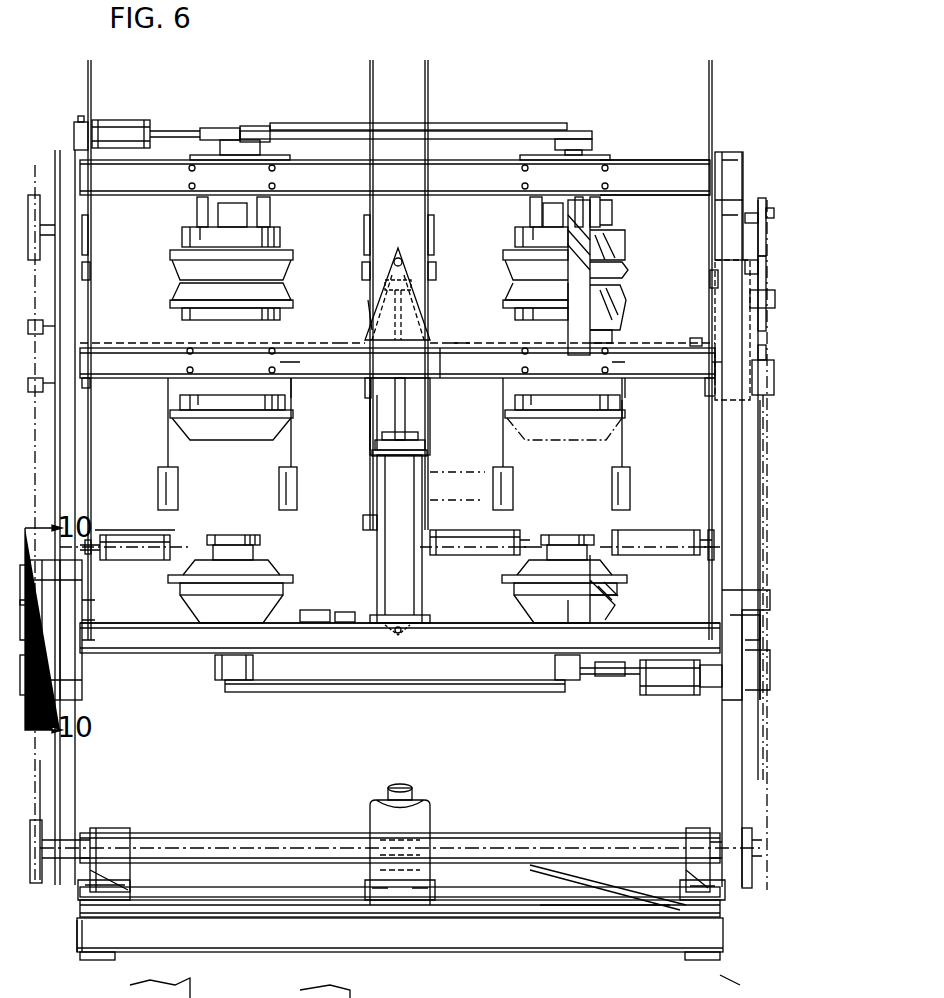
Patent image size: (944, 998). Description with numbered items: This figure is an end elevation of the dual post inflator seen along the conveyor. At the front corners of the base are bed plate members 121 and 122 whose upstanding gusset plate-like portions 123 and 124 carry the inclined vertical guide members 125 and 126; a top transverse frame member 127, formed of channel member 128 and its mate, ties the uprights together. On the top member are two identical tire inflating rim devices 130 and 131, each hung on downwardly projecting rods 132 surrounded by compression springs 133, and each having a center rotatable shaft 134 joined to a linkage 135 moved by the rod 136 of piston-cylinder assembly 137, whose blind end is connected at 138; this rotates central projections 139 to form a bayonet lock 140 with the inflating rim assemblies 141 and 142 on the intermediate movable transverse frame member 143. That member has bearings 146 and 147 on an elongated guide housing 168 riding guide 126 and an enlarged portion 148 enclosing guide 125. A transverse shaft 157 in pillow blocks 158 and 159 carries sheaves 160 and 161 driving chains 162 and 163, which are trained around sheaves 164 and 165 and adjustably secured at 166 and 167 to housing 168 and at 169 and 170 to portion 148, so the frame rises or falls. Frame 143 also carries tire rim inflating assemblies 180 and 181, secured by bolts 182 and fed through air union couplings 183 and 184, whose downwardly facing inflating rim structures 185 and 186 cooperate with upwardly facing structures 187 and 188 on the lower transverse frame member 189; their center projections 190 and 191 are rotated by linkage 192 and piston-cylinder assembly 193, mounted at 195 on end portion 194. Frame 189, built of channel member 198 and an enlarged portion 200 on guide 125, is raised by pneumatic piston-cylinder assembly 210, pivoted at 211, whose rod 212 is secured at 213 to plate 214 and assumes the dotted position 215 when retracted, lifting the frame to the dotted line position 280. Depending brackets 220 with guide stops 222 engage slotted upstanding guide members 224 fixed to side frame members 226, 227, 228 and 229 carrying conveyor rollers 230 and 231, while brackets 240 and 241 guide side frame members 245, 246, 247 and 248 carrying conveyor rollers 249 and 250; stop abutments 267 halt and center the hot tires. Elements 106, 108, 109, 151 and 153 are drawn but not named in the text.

The floor 106 is at (400, 960).
The base frame 108 is at (724, 932).
The base end 109 is at (78, 932).
The bed plate member 121 is at (112, 916).
The bed plate member 122 is at (690, 906).
The upstanding gusset plate-like portion 123 is at (80, 900).
The upstanding gusset plate-like portion 124 is at (740, 886).
The inclined vertical guide member 125 is at (75, 758).
The inclined vertical guide member 126 is at (724, 750).
The top transverse frame member 127 is at (636, 152).
The channel member 128 is at (458, 176).
The tire inflating rim device 130 is at (168, 226).
The tire inflating rim device 131 is at (634, 236).
The downwardly projecting rod 132 is at (528, 213).
The compression spring 133 is at (603, 212).
The center rotatable shaft 134 is at (265, 208).
The linkage 135 is at (478, 124).
The rod 136 is at (185, 128).
The piston-cylinder assembly 137 is at (125, 120).
The blind end connection 138 is at (80, 120).
The central projection 139 is at (618, 268).
The bayonet lock 140 is at (616, 300).
The inflating rim assembly 141 is at (185, 292).
The inflating rim assembly 142 is at (520, 296).
The intermediate movable transverse frame member 143 is at (478, 376).
The bearing 146 is at (758, 420).
The bearing 147 is at (752, 268).
The enlarged portion 148 is at (65, 360).
The diagonal brace 151 is at (585, 906).
The motor 153 is at (425, 830).
The transverse shaft 157 is at (252, 840).
The pillow block 158 is at (112, 842).
The pillow block 159 is at (690, 850).
The sheave 160 is at (45, 836).
The sheave 161 is at (740, 850).
The chain 162 is at (38, 786).
The chain 163 is at (765, 776).
The sheave 164 is at (36, 194).
The sheave 165 is at (762, 205).
The adjustable securing means 166 is at (768, 306).
The adjustable securing means 167 is at (766, 380).
The elongated guide housing 168 is at (744, 350).
The adjustment means 169 is at (45, 390).
The adjustment means 170 is at (43, 328).
The tire rim inflating assembly 180 is at (296, 396).
The tire rim inflating assembly 181 is at (622, 410).
The bolt 182 is at (278, 371).
The air union coupling 183 is at (612, 336).
The air union coupling 184 is at (624, 380).
The downwardly facing inflating rim structure 185 is at (232, 440).
The downwardly facing inflating rim structure 186 is at (622, 440).
The upwardly facing inflating rim structure 187 is at (288, 570).
The upwardly facing inflating rim structure 188 is at (632, 598).
The lower transverse frame member 189 is at (456, 616).
The center projection 190 is at (236, 540).
The center projection 191 is at (565, 545).
The linkage 192 is at (360, 694).
The piston-cylinder assembly 193 is at (665, 696).
The end portion 194 is at (724, 598).
The blind end mounting 195 is at (708, 690).
The transverse structural channel-shaped member 198 is at (182, 654).
The enlarged portion 200 is at (70, 680).
The pneumatic piston-cylinder assembly 210 is at (400, 578).
The pivot 211 is at (408, 633).
The rod 212 is at (405, 420).
The rod securing point 213 is at (404, 263).
The plate 214 is at (416, 320).
The retracted rod end position 215 is at (368, 312).
The depending bracket 220 is at (88, 240).
The guide stop 222 is at (90, 278).
The upstanding guide member 224 is at (92, 84).
The side frame member 226 is at (98, 342).
The side frame member 227 is at (360, 342).
The side frame member 228 is at (436, 342).
The side frame member 229 is at (697, 338).
The conveyor roller 230 is at (364, 382).
The conveyor roller 231 is at (712, 378).
The bracket 240 is at (370, 436).
The bracket 241 is at (92, 386).
The conveyor side frame member 245 is at (100, 535).
The conveyor side frame member 246 is at (370, 520).
The conveyor side frame member 247 is at (440, 536).
The conveyor side frame member 248 is at (710, 530).
The conveyor roller 249 is at (145, 560).
The conveyor roller 250 is at (650, 556).
The stop abutment 267 is at (298, 490).
The dotted line position 280 is at (478, 462).